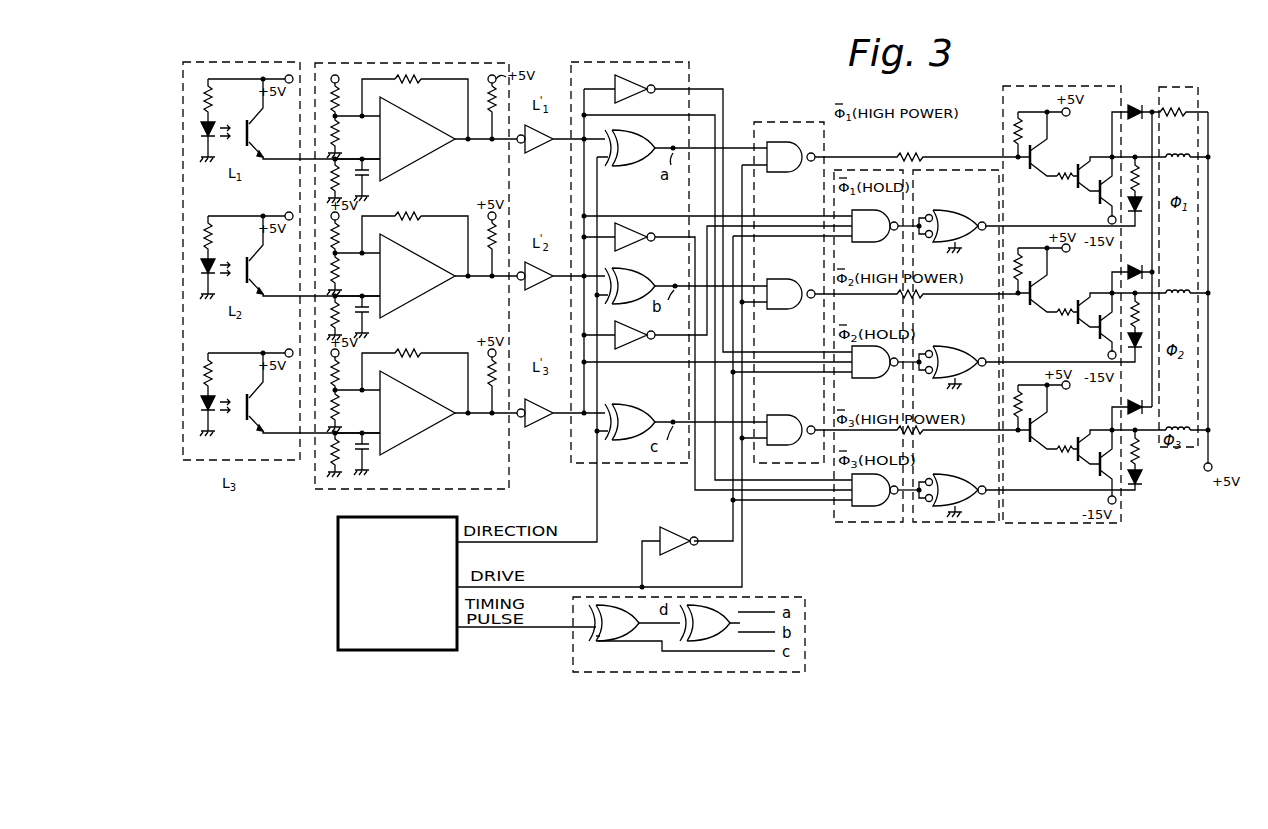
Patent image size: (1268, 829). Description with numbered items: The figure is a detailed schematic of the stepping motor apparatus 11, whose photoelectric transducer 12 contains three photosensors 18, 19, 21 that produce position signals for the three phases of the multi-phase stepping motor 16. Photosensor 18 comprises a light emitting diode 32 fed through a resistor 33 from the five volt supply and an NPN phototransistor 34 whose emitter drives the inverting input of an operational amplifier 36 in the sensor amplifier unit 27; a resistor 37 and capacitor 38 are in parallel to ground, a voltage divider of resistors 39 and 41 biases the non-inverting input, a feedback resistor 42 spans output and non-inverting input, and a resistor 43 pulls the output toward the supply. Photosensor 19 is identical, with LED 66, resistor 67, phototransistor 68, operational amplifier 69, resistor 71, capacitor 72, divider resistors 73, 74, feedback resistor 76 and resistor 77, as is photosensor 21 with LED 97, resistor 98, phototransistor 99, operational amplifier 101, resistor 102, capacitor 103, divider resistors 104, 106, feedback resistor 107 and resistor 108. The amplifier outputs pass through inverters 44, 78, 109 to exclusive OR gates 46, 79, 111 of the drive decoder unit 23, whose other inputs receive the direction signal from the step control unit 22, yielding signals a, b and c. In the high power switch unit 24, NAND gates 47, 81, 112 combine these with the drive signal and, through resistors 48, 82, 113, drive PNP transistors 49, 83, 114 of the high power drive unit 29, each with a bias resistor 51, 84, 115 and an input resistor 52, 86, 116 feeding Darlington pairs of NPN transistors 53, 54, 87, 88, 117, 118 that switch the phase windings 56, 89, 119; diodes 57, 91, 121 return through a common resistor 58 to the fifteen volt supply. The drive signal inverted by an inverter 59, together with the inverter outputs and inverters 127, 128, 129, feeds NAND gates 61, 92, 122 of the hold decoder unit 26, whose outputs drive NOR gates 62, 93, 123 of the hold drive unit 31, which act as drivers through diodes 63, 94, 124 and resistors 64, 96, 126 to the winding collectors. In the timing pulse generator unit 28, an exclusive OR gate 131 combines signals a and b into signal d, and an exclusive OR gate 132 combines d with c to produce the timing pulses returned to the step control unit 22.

The stepping motor apparatus 11 is at (730, 46).
The photoelectric transducer 12 is at (234, 62).
The multi-phase stepping motor 16 is at (1176, 74).
The photosensor 18 is at (186, 118).
The photosensor 19 is at (186, 255).
The photosensor 21 is at (186, 392).
The step control unit 22 is at (338, 592).
The drive decoder unit 23 is at (620, 61).
The high power switch unit 24 is at (776, 122).
The hold decoder unit 26 is at (874, 522).
The sensor amplifier unit 27 is at (368, 63).
The timing pulse generator unit 28 is at (808, 614).
The high power drive unit 29 is at (1034, 78).
The hold drive unit 31 is at (968, 522).
The light emitting diode 32 is at (202, 132).
The resistor 33 is at (205, 95).
The NPN phototransistor 34 is at (247, 122).
The operational amplifier 36 is at (416, 120).
The resistor 37 is at (332, 175).
The capacitor 38 is at (368, 176).
The resistor 39 is at (332, 98).
The resistor 41 is at (332, 130).
The feedback resistor 42 is at (412, 76).
The resistor 43 is at (492, 124).
The inverter 44 is at (536, 153).
The exclusive OR gate 46 is at (642, 132).
The NAND gate 47 is at (788, 172).
The resistor 48 is at (920, 170).
The PNP transistor 49 is at (1030, 170).
The bias resistor 51 is at (1014, 128).
The input resistor 52 is at (1064, 174).
The NPN transistor 53 is at (1074, 194).
The NPN transistor 54 is at (1098, 204).
The phase 1 winding 56 is at (1190, 154).
The diode 57 is at (1132, 102).
The resistor 58 is at (1182, 110).
The inverter 59 is at (674, 528).
The NAND gate 61 is at (880, 246).
The NOR gate 62 is at (966, 210).
The diode 63 is at (1140, 202).
The resistor 64 is at (1142, 168).
The light emitting diode 66 is at (202, 269).
The resistor 67 is at (205, 232).
The NPN phototransistor 68 is at (247, 259).
The operational amplifier 69 is at (416, 257).
The resistor 71 is at (332, 312).
The capacitor 72 is at (362, 304).
The resistor 73 is at (332, 235).
The resistor 74 is at (332, 267).
The feedback resistor 76 is at (412, 216).
The resistor 77 is at (490, 260).
The inverter 78 is at (536, 301).
The exclusive OR gate 79 is at (647, 276).
The NAND gate 81 is at (788, 306).
The resistor 82 is at (914, 298).
The PNP transistor 83 is at (1030, 306).
The bias resistor 84 is at (1018, 264).
The input resistor 86 is at (1064, 308).
The NPN transistor 87 is at (1072, 328).
The NPN transistor 88 is at (1096, 338).
The phase 2 winding 89 is at (1188, 292).
The diode 91 is at (1146, 268).
The NAND gate 92 is at (876, 380).
The NOR gate 93 is at (964, 346).
The diode 94 is at (1140, 340).
The resistor 96 is at (1142, 310).
The light emitting diode 97 is at (202, 405).
The resistor 98 is at (205, 372).
The NPN phototransistor 99 is at (247, 394).
The operational amplifier 101 is at (418, 394).
The resistor 102 is at (332, 454).
The capacitor 103 is at (362, 440).
The resistor 104 is at (332, 368).
The resistor 106 is at (332, 405).
The feedback resistor 107 is at (406, 352).
The resistor 108 is at (492, 400).
The inverter 109 is at (536, 433).
The exclusive OR gate 111 is at (628, 406).
The NAND gate 112 is at (790, 414).
The resistor 113 is at (914, 434).
The PNP transistor 114 is at (1030, 440).
The bias resistor 115 is at (1016, 398).
The input resistor 116 is at (1064, 446).
The NPN transistor 117 is at (1072, 464).
The NPN transistor 118 is at (1098, 484).
The phase 3 winding 119 is at (1184, 424).
The diode 121 is at (1146, 406).
The NAND gate 122 is at (874, 508).
The NOR gate 123 is at (960, 476).
The diode 124 is at (1138, 482).
The resistor 126 is at (1140, 448).
The inverter 127 is at (652, 91).
The inverter 128 is at (634, 226).
The inverter 129 is at (648, 332).
The exclusive OR gate 131 is at (724, 604).
The exclusive OR gate 132 is at (590, 648).